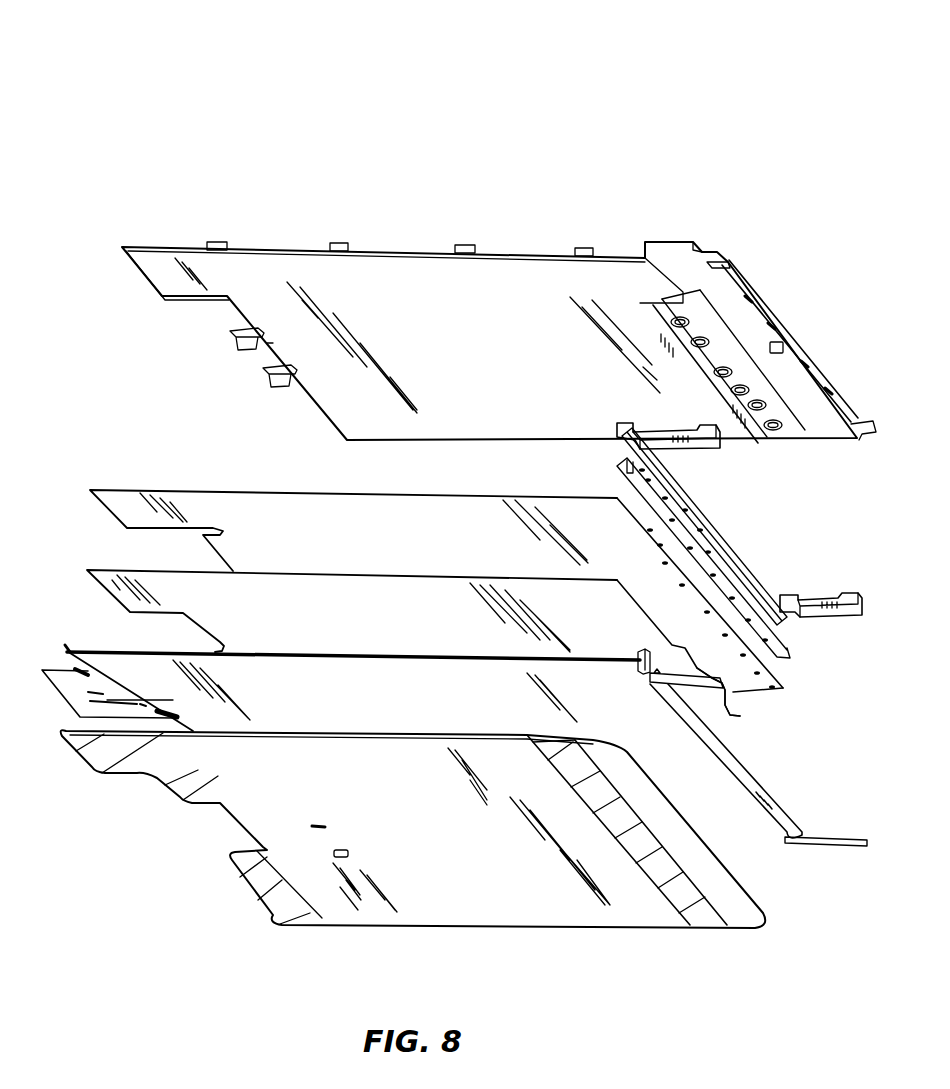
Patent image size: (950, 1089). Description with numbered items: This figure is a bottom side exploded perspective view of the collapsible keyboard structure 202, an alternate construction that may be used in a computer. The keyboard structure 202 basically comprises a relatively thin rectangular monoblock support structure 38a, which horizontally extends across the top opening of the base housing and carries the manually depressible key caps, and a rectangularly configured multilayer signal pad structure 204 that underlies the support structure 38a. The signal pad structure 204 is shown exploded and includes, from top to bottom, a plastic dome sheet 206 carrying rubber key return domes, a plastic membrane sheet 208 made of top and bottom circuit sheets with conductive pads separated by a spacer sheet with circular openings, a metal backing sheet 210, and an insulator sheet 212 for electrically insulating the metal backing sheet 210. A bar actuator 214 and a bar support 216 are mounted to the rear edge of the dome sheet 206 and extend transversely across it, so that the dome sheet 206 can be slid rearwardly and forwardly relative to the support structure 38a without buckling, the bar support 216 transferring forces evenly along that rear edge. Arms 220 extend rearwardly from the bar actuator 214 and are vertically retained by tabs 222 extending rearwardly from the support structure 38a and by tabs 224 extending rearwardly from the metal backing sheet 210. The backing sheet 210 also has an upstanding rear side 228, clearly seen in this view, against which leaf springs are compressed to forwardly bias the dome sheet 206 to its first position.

The collapsible keyboard structure 202 is at (751, 97).
The monoblock support structure 38a is at (410, 250).
The tabs 222 is at (733, 260).
The arms 220 is at (703, 452).
The multilayer signal pad structure 204 is at (842, 477).
The dome sheet 206 is at (248, 488).
The membrane sheet 208 is at (140, 569).
The metal backing sheet 210 is at (123, 647).
The insulator sheet 212 is at (142, 777).
The bar actuator 214 is at (705, 503).
The bar support 216 is at (787, 652).
The upstanding rear side 228 is at (760, 797).
The tabs 224 is at (733, 717).